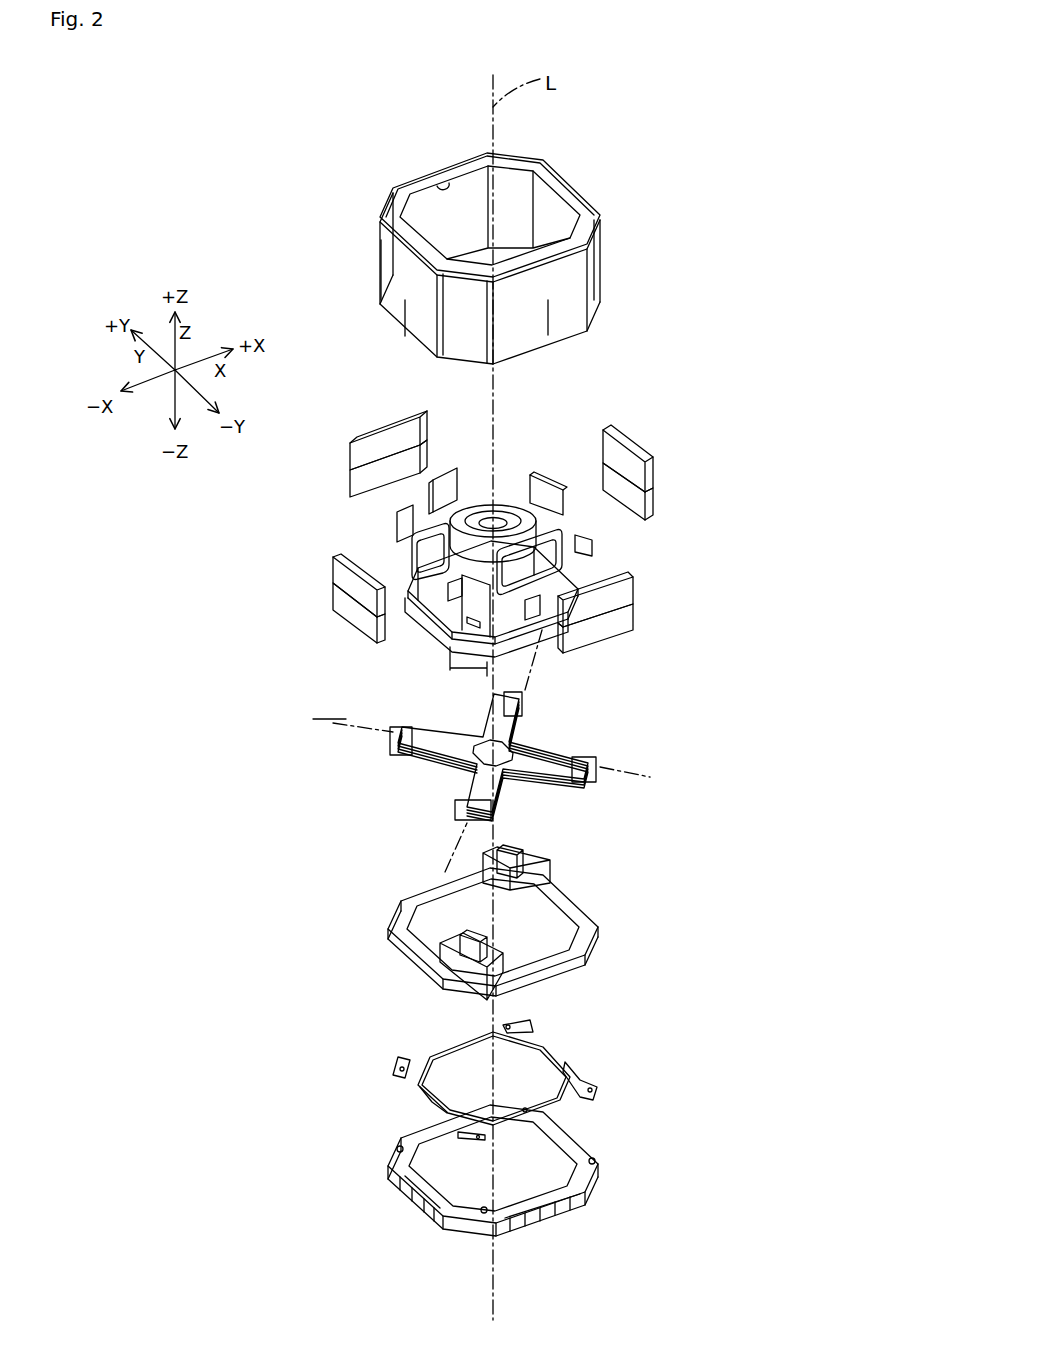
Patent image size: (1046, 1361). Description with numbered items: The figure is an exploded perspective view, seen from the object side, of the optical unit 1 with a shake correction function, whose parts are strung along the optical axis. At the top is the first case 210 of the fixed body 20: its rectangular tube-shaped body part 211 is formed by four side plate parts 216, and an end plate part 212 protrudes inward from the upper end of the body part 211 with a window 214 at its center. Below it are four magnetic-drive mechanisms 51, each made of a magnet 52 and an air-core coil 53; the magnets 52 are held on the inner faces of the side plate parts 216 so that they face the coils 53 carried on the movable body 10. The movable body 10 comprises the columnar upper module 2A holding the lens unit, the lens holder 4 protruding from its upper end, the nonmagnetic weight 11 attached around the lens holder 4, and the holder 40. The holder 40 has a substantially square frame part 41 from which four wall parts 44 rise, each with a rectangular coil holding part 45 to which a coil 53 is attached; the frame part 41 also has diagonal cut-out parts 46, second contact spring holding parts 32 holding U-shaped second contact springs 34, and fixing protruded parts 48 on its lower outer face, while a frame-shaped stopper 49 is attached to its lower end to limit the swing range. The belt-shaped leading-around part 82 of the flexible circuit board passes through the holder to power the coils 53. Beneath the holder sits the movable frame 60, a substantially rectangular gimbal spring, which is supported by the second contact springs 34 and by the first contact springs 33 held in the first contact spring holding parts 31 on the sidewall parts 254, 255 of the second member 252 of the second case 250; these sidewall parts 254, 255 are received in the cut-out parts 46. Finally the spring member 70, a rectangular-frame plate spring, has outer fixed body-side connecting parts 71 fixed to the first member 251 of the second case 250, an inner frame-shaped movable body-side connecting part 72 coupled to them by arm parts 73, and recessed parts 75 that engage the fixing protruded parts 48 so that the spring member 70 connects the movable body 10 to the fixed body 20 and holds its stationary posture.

The optical unit with a shake correction function 1 is at (184, 171).
The upper module 2A is at (440, 537).
The lens holder 4 is at (500, 515).
The movable body 10 is at (206, 560).
The weight 11 is at (518, 503).
The fixed body 20 is at (772, 1018).
The first contact spring holding part 31 is at (518, 852).
The second contact spring holding part 32 is at (400, 526).
The first contact spring 33 is at (522, 708).
The second contact spring 34 is at (393, 736).
The holder 40 is at (413, 572).
The frame part 41 is at (460, 553).
The wall part 44 is at (448, 492).
The coil holding part 45 is at (518, 582).
The cut-out part 46 is at (473, 614).
The fixing protruded part 48 is at (456, 592).
The stopper 49 is at (405, 600).
The magnetic-drive mechanism 51 is at (295, 455).
The magnet 52 is at (350, 452).
The coil 53 is at (352, 492).
The movable frame 60 is at (419, 778).
The spring member 70 is at (385, 1098).
The fixed body-side connecting part 71 is at (396, 1059).
The movable body-side connecting part 72 is at (430, 1100).
The arm part 73 is at (430, 1055).
The recessed part 75 is at (457, 1050).
The leading-around part 82 is at (449, 662).
The first case 210 is at (619, 277).
The body part 211 is at (387, 257).
The end plate part 212 is at (388, 196).
The window 214 is at (442, 184).
The side plate part 216 is at (413, 323).
The second case 250 is at (727, 952).
The first member 251 is at (597, 1143).
The second member 252 is at (600, 933).
The sidewall part 254 is at (443, 963).
The sidewall part 255 is at (549, 873).